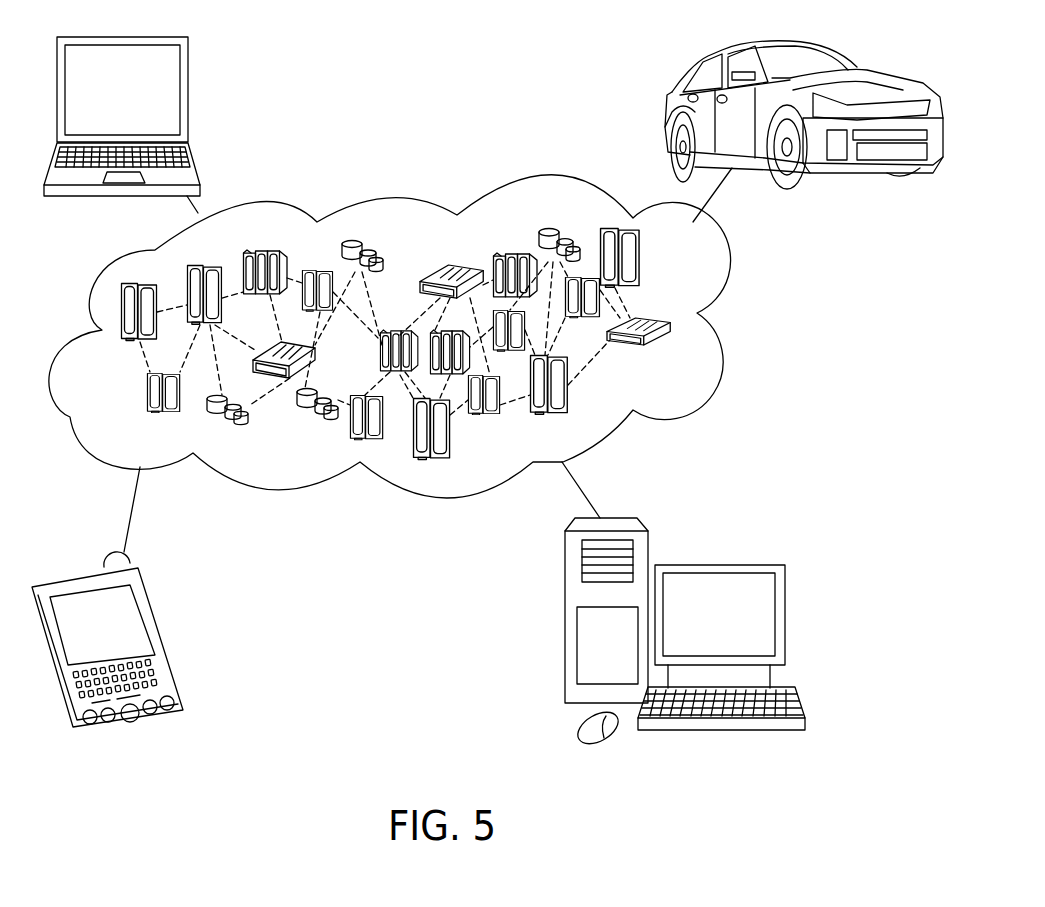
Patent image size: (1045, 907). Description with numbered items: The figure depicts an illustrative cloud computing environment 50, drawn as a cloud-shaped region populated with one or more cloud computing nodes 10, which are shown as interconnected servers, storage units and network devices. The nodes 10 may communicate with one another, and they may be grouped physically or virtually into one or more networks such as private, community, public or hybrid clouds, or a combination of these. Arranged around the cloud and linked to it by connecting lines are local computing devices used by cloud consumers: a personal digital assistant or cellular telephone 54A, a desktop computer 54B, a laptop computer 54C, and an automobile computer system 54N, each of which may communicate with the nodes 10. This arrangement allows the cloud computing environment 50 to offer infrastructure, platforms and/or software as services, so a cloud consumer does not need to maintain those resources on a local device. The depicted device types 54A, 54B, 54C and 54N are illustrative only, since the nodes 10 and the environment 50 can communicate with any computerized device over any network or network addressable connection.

The cloud computing node 10 is at (687, 363).
The cloud computing environment 50 is at (737, 265).
The personal digital assistant or cellular telephone 54A is at (157, 615).
The desktop computer 54B is at (785, 612).
The laptop computer 54C is at (188, 95).
The automobile computer system 54N is at (857, 62).